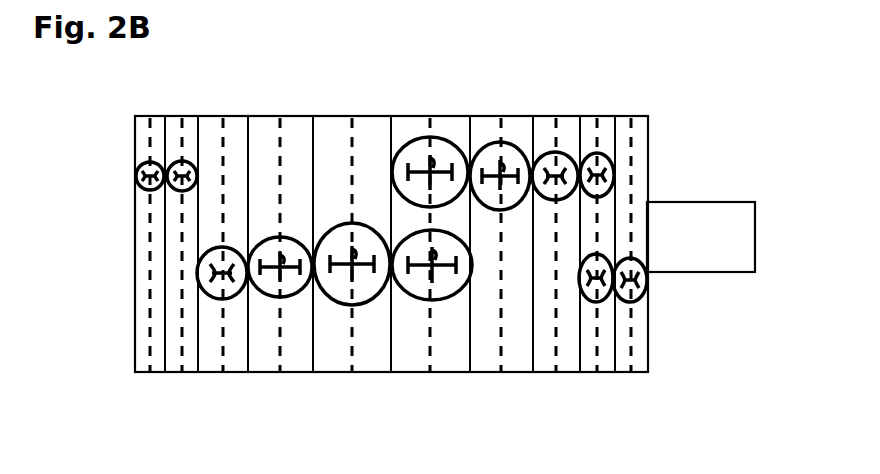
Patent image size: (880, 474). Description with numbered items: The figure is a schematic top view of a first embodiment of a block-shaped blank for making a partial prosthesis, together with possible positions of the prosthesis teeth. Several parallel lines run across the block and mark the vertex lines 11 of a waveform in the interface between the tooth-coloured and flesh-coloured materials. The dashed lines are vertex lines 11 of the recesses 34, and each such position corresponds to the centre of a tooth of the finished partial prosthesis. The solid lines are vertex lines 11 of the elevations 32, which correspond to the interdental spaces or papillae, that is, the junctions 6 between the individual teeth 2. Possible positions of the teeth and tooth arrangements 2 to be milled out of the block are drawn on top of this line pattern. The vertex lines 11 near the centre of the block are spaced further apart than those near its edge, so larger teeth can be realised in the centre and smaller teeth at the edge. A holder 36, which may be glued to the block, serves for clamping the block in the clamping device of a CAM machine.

The teeth 2 is at (413, 158).
The junction 6 is at (533, 155).
The vertex line 11 is at (312, 344).
The elevation 32 is at (163, 282).
The recess 34 is at (181, 218).
The holder 36 is at (708, 251).